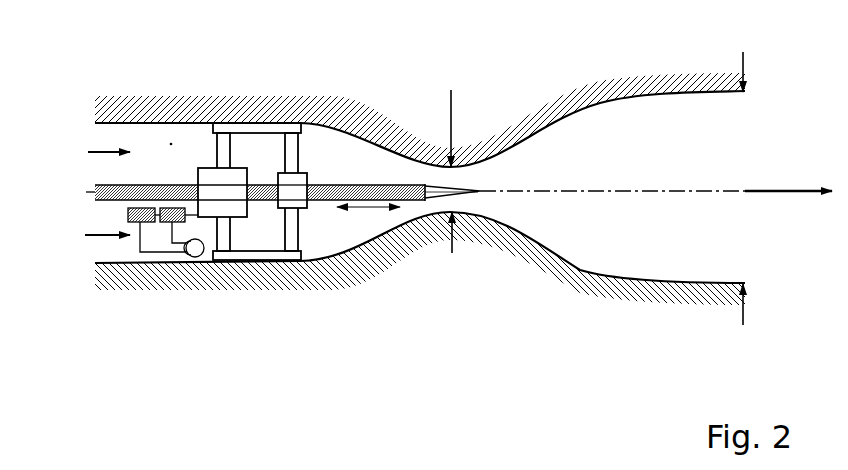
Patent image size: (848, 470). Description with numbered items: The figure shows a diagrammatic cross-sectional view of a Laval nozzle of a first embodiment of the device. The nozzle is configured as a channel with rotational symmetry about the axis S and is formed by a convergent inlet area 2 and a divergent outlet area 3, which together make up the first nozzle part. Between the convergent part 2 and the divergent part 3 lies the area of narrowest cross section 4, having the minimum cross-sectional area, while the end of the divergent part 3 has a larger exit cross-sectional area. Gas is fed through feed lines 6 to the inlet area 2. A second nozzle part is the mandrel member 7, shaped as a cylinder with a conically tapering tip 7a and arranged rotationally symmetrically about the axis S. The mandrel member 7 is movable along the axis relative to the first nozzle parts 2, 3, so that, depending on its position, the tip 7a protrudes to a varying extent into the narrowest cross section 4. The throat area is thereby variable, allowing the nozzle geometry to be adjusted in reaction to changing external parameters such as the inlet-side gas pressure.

The convergent inlet area 2 is at (175, 140).
The divergent outlet area 3 is at (608, 142).
The area of narrowest cross section 4 is at (441, 184).
The feed lines 6 is at (77, 225).
The mandrel member 7 is at (143, 188).
The conically tapering tip 7a is at (445, 177).